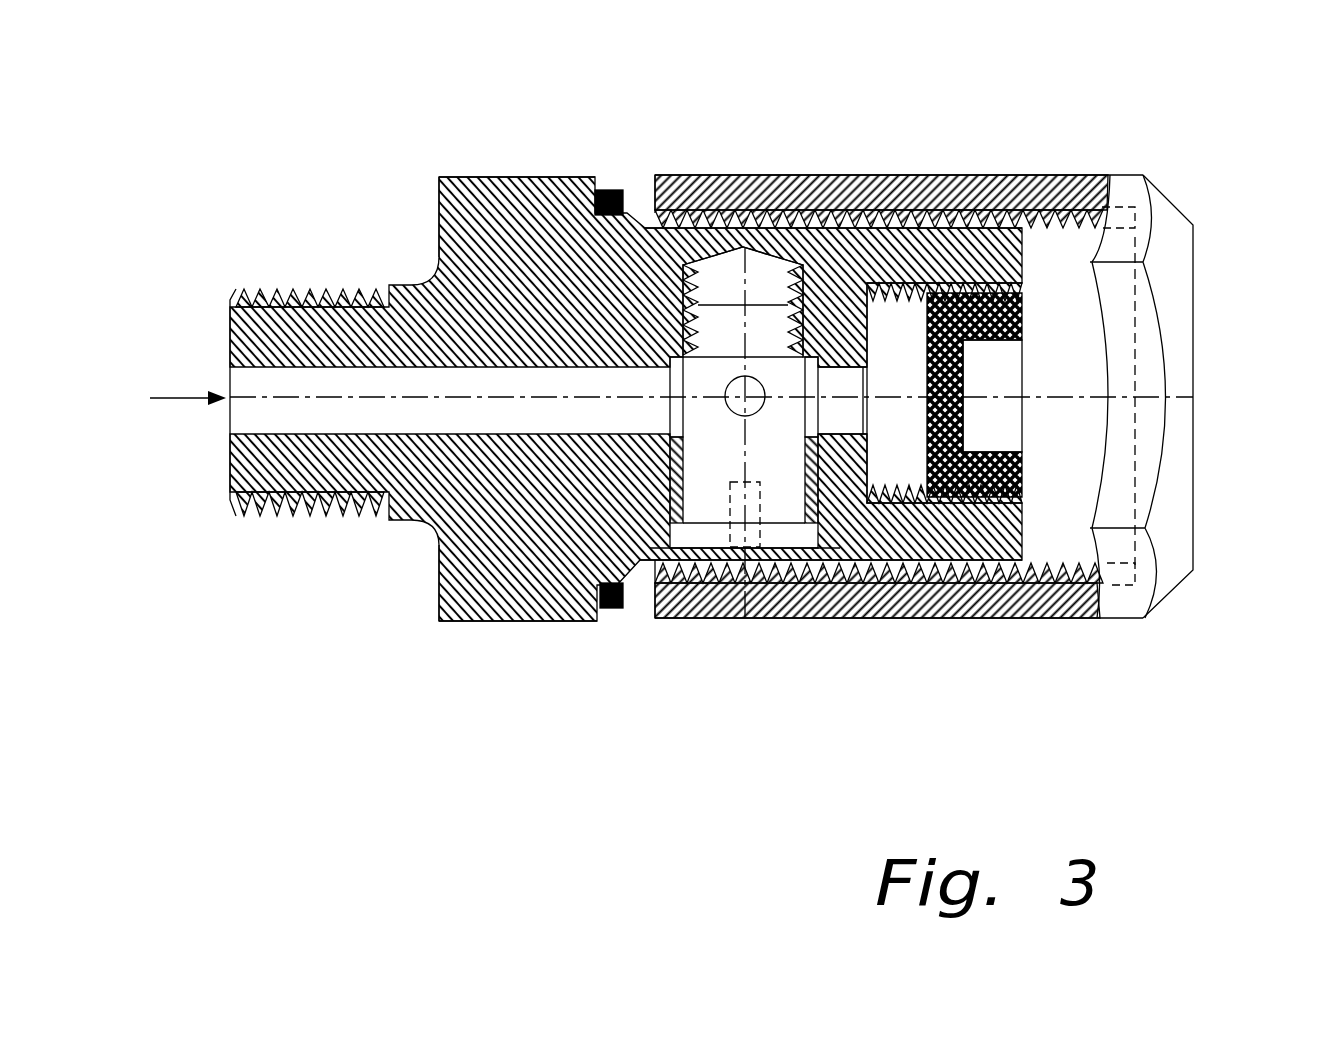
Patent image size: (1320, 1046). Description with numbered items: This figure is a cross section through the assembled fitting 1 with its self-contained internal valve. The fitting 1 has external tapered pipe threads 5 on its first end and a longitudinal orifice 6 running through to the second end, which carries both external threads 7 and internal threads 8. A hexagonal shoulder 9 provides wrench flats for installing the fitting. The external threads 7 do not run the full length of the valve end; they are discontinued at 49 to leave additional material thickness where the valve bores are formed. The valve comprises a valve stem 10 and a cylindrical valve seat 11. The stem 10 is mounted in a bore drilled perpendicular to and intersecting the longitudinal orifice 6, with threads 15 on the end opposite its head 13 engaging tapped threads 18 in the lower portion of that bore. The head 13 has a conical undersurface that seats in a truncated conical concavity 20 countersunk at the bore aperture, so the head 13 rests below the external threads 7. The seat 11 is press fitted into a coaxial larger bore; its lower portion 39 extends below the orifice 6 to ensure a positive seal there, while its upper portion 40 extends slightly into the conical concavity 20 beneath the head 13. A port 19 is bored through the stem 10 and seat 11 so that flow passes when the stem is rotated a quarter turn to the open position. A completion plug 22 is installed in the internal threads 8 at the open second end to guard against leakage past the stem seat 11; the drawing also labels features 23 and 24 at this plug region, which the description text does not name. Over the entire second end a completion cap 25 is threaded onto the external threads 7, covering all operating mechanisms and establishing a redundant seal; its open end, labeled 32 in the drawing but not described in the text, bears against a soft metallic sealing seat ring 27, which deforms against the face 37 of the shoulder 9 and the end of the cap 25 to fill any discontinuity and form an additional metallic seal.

The fitting 1 is at (398, 222).
The external tapered pipe threads 5 is at (281, 289).
The longitudinal orifice 6 is at (178, 396).
The external threads 7 is at (1020, 585).
The internal threads 8 is at (1023, 290).
The hexagonal shoulder 9 is at (475, 207).
The valve stem 10 is at (710, 467).
The cylindrical valve seat 11 is at (972, 580).
The head 13 is at (795, 537).
The threads 15 is at (700, 290).
The threads 18 is at (778, 287).
The port 19 is at (822, 365).
The truncated conical concavity 20 is at (848, 575).
The completion plug 22 is at (1023, 313).
The threaded bore 23 is at (1005, 495).
The outlet bore 24 is at (990, 353).
The completion cap 25 is at (1127, 618).
The sealing seat ring 27 is at (627, 207).
The cap end face 32 is at (652, 615).
The face of the shoulder 37 is at (613, 610).
The lower portion of the seat 39 is at (560, 283).
The upper portion of the seat 40 is at (838, 555).
The thread discontinuation 49 is at (755, 392).